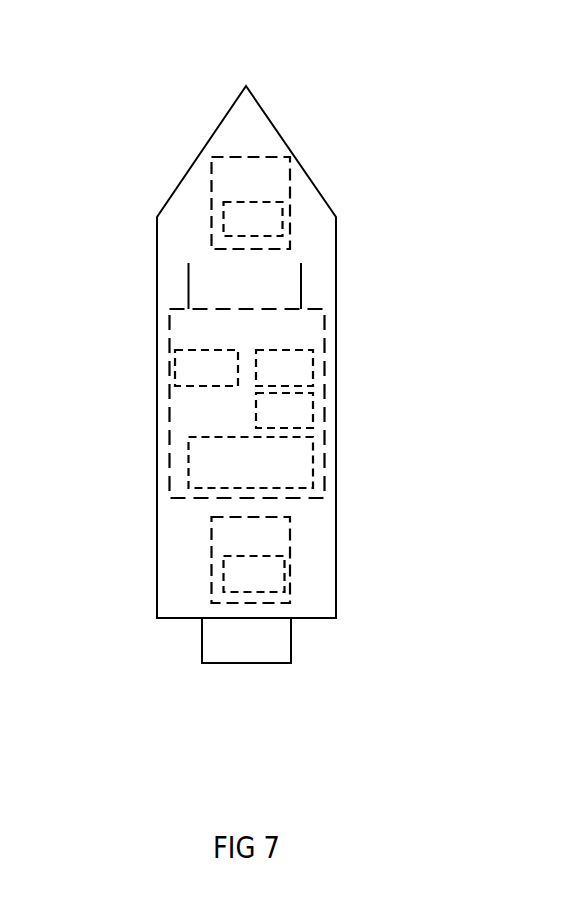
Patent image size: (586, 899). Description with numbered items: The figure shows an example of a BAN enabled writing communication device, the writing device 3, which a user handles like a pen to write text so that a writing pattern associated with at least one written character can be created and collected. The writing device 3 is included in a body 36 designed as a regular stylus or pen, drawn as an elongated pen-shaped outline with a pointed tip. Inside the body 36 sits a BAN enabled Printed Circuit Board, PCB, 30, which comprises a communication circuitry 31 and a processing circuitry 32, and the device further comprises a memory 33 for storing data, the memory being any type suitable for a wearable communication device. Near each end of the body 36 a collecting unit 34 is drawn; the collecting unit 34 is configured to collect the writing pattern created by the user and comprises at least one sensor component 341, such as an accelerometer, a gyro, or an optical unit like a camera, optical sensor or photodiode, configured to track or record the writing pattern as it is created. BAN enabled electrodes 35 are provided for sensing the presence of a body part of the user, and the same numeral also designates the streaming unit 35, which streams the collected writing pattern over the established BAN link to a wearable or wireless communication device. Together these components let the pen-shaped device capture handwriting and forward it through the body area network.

The writing device 3 is at (183, 346).
The BAN enabled Printed Circuit Board 30 is at (247, 403).
The communication circuitry 31 is at (206, 368).
The processing circuitry 32 is at (251, 462).
The memory 33 is at (284, 368).
The collecting unit 34 is at (251, 380).
The sensor component 341 is at (254, 397).
The BAN enabled electrodes / streaming unit 35 is at (251, 345).
The body 36 is at (150, 524).